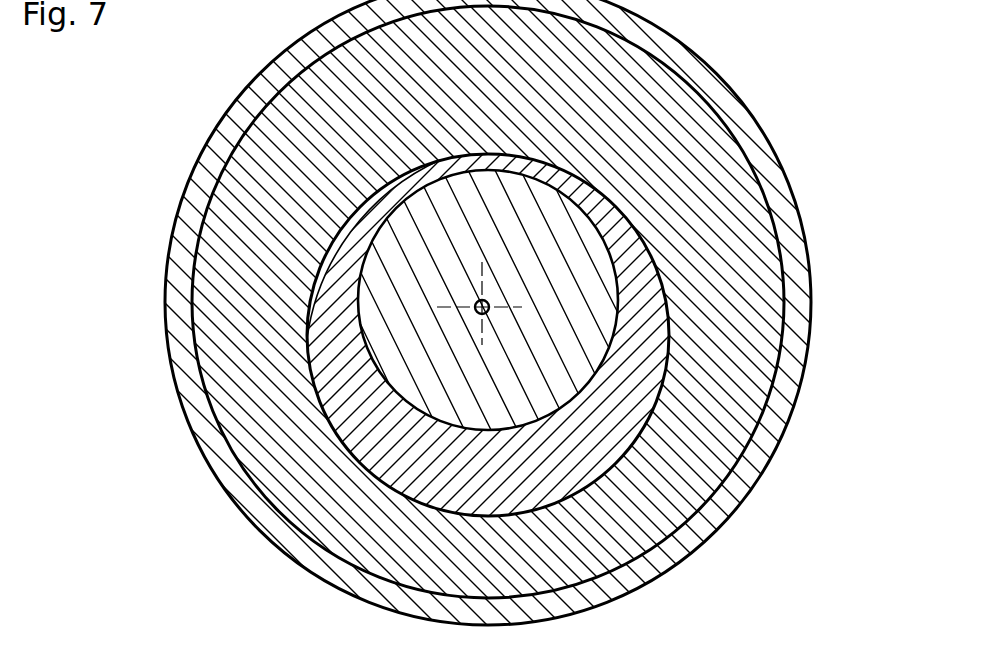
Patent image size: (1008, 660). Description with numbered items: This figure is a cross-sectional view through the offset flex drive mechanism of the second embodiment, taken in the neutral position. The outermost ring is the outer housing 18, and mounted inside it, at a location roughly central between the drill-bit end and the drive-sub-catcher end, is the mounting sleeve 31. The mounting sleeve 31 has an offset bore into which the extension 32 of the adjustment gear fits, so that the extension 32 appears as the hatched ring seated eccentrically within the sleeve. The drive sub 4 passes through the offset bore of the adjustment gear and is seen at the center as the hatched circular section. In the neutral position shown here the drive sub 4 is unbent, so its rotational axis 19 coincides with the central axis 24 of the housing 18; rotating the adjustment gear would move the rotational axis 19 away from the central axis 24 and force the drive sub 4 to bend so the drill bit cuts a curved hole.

The drive sub 4 is at (415, 265).
The outer housing 18 is at (737, 98).
The rotational axis 19 is at (492, 300).
The central axis 24 is at (490, 306).
The mounting sleeve 31 is at (735, 405).
The extension 32 is at (640, 355).